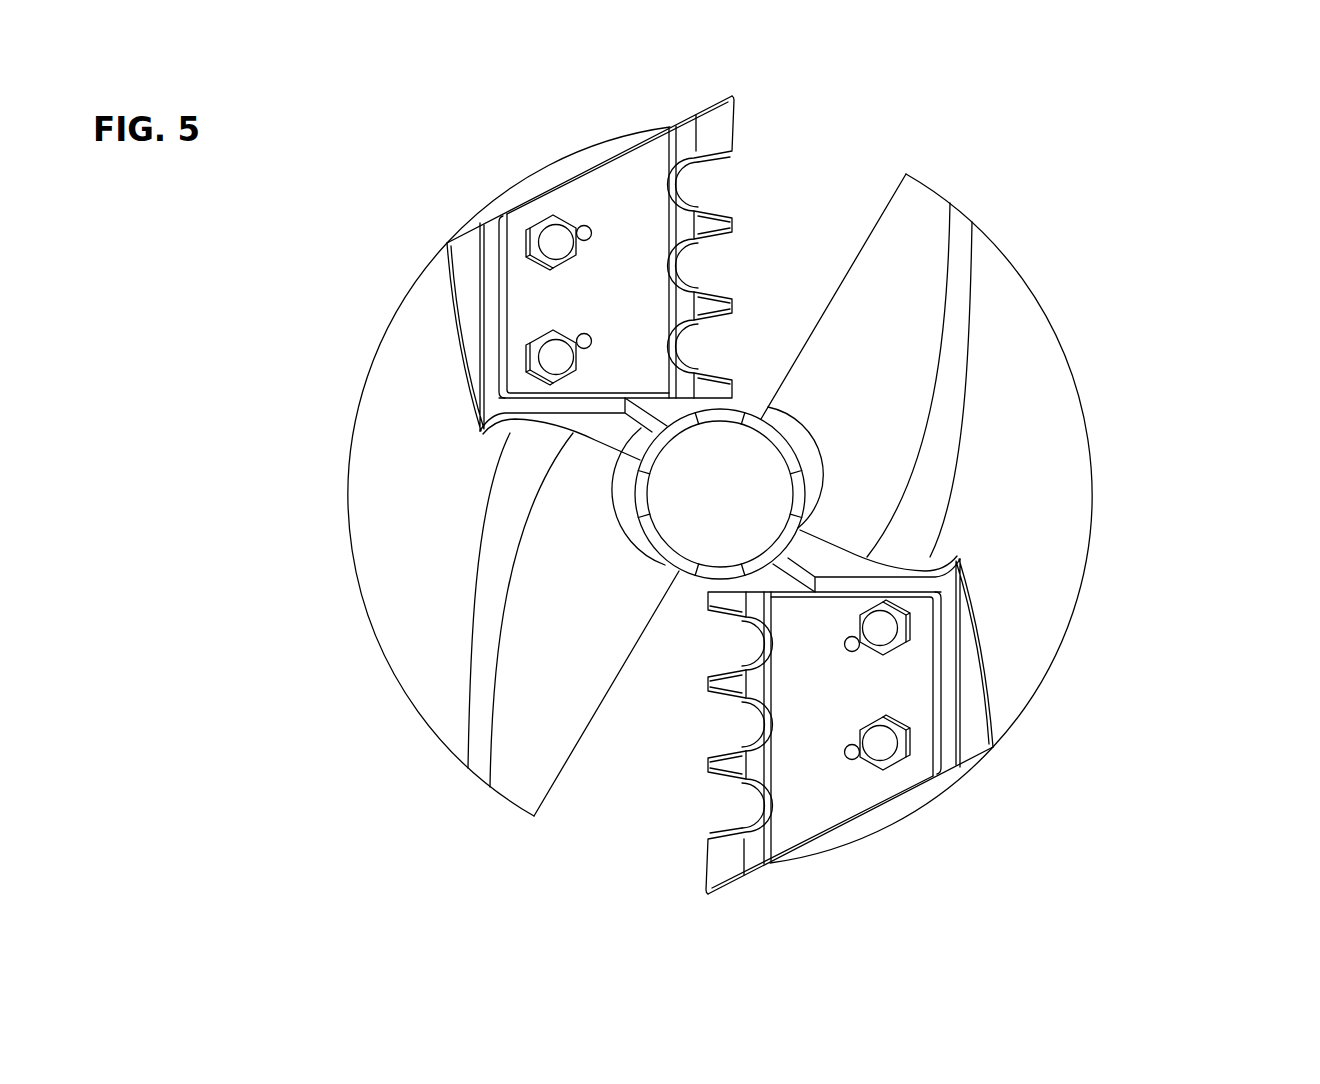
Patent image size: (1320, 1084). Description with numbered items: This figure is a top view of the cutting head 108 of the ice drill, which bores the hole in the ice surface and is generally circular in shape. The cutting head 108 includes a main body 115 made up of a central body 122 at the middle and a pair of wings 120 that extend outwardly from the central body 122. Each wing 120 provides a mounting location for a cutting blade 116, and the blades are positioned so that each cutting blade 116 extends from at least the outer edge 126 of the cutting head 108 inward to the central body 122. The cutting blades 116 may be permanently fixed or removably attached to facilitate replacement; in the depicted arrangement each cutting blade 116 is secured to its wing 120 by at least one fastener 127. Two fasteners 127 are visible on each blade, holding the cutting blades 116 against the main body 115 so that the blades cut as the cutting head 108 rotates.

The cutting head 108 is at (1166, 239).
The main body 115 is at (1053, 448).
The cutting blade 116 is at (630, 197).
The wing 120 is at (385, 517).
The central body 122 is at (688, 567).
The outer edge 126 is at (425, 722).
The fastener 127 is at (883, 753).